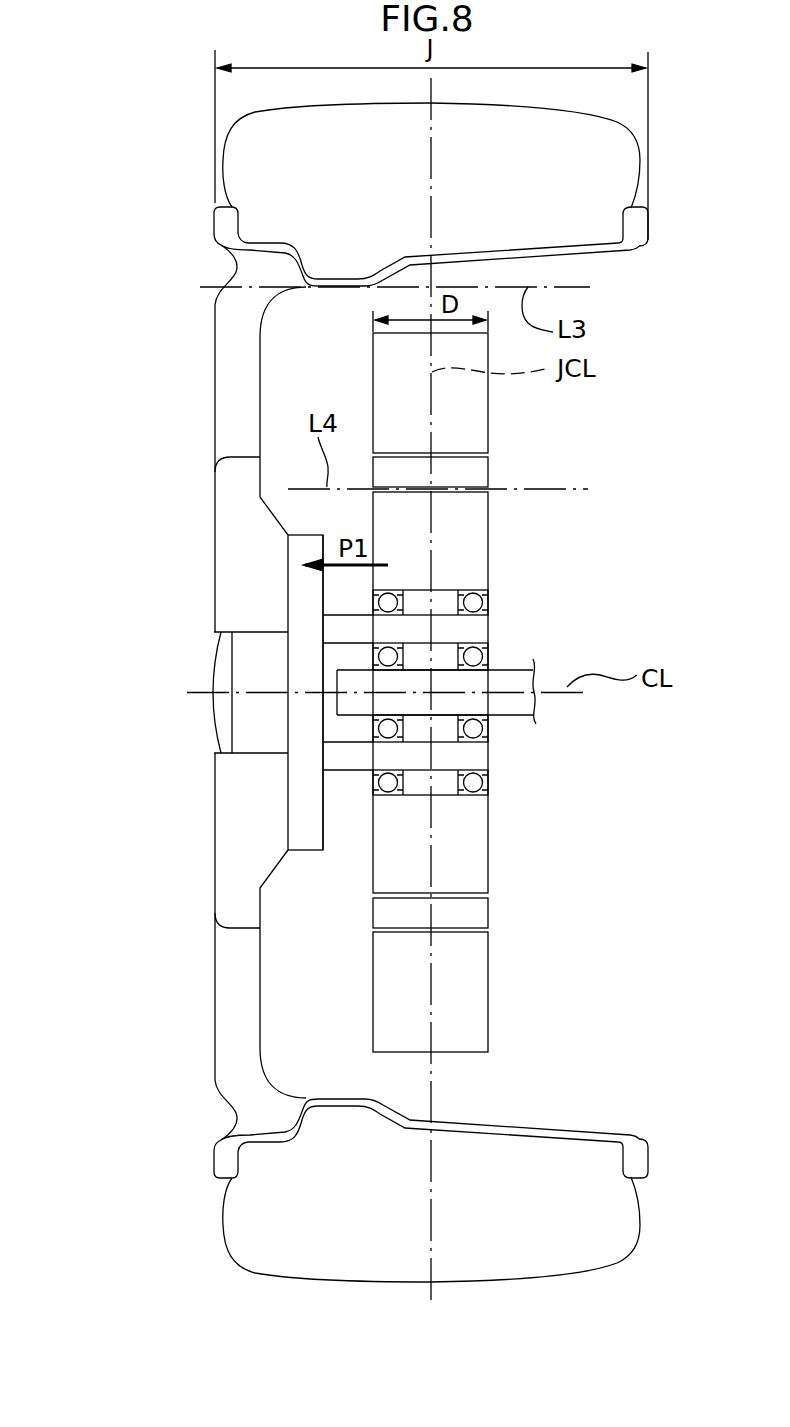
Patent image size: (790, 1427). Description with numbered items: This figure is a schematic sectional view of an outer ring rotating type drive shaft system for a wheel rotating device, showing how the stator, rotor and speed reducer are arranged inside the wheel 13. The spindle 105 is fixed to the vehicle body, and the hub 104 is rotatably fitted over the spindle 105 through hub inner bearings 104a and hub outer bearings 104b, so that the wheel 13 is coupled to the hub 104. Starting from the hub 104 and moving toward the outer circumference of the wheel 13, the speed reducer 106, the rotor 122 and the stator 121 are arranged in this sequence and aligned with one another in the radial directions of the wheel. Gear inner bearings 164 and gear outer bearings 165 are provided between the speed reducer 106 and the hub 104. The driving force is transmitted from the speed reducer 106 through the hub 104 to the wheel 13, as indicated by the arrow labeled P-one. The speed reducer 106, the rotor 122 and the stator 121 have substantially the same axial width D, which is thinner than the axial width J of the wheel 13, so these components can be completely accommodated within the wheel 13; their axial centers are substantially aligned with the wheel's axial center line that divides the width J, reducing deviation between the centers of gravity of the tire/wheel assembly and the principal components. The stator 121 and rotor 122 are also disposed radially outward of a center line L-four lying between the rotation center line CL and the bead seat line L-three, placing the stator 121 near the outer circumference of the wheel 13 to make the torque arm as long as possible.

The wheel 13 is at (213, 832).
The gear outer bearing 165 is at (378, 604).
The hub outer bearing 104b is at (373, 658).
The speed reducer 106 is at (488, 530).
The stator 121 is at (488, 410).
The rotor 122 is at (488, 470).
The gear inner bearing 164 is at (478, 603).
The hub inner bearing 104a is at (478, 657).
The hub 104 is at (468, 755).
The spindle 105 is at (500, 718).